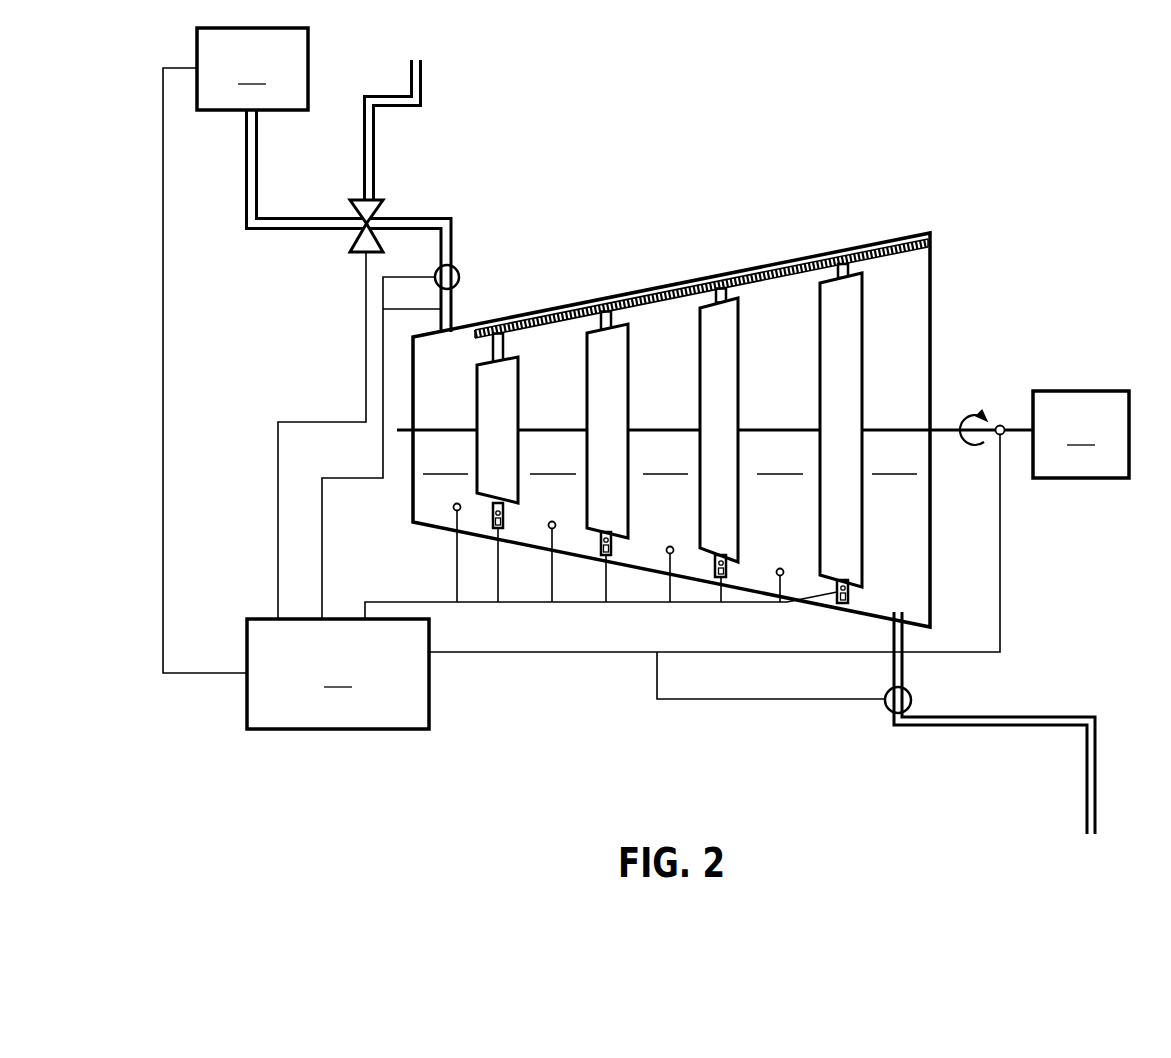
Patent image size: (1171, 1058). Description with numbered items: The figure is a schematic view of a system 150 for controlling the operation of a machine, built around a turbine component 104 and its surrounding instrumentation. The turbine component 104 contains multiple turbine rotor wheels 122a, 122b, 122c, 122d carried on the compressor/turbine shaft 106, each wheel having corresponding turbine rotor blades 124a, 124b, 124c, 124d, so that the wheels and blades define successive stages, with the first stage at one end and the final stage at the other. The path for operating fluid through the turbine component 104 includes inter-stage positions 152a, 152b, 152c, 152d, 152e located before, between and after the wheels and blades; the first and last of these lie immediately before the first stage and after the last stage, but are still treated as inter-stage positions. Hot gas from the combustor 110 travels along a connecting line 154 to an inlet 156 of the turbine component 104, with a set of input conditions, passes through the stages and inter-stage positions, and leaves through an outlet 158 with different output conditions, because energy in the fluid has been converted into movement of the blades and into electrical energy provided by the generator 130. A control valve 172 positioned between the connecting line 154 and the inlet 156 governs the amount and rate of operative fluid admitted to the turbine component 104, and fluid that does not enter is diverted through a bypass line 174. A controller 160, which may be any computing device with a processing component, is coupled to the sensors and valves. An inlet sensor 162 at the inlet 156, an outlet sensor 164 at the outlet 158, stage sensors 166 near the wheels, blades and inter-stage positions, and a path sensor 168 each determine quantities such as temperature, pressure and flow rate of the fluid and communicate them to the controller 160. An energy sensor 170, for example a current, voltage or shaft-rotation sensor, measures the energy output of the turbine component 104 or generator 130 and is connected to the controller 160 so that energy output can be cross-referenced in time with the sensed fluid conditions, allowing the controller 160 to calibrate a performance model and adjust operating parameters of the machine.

The turbine component 104 is at (946, 298).
The compressor/turbine shaft 106 is at (457, 425).
The combustor 110 is at (252, 69).
The turbine rotor wheel 122a is at (520, 417).
The turbine rotor wheel 122b is at (630, 387).
The turbine rotor wheel 122c is at (738, 378).
The turbine rotor wheel 122d is at (863, 360).
The turbine rotor blade 124a is at (507, 340).
The turbine rotor blade 124b is at (618, 300).
The turbine rotor blade 124c is at (733, 280).
The turbine rotor blade 124d is at (852, 250).
The generator 130 is at (1081, 434).
The system 150 is at (564, 711).
The inter-stage position 152a is at (445, 463).
The inter-stage position 152b is at (553, 463).
The inter-stage position 152c is at (665, 463).
The inter-stage position 152d is at (780, 463).
The inter-stage position 152e is at (894, 463).
The connecting line 154 is at (285, 217).
The inlet 156 is at (453, 317).
The outlet 158 is at (1093, 813).
The controller 160 is at (581, 398).
The inlet sensor 162 is at (453, 262).
The outlet sensor 164 is at (910, 695).
The stage sensor 166 is at (450, 513).
The path sensor 168 is at (915, 235).
The energy sensor 170 is at (1005, 422).
The control valve 172 is at (377, 193).
The bypass line 174 is at (402, 93).